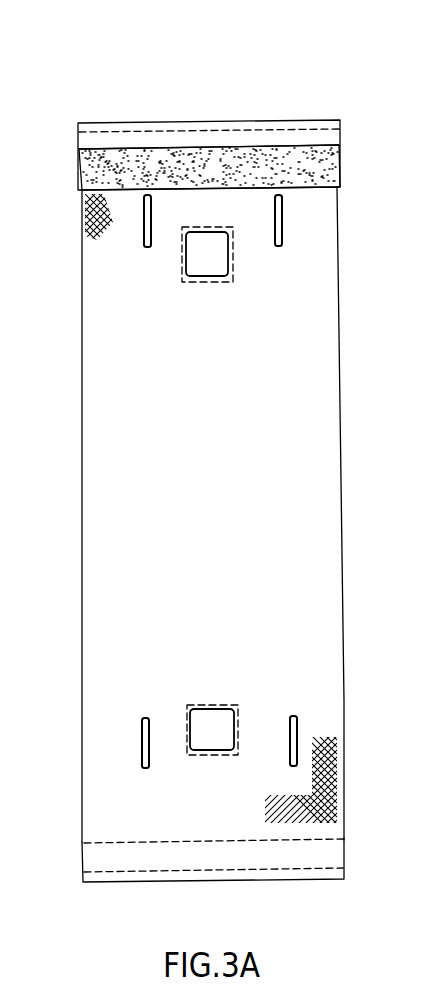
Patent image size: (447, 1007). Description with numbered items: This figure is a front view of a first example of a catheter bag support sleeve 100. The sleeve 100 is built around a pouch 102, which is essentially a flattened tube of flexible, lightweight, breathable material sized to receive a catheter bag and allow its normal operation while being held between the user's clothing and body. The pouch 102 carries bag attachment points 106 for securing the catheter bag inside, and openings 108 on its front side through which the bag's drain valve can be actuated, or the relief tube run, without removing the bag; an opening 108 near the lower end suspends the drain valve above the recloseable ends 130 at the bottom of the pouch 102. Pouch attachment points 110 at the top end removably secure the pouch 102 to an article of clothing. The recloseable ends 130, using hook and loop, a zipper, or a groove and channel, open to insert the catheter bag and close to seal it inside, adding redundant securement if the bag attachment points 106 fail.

The catheter bag support sleeve 100 is at (79, 47).
The pouch 102 is at (120, 503).
The bag attachment points 106 is at (143, 237).
The openings 108 is at (207, 263).
The pouch attachment points 110 is at (320, 164).
The recloseable ends 130 is at (199, 121).